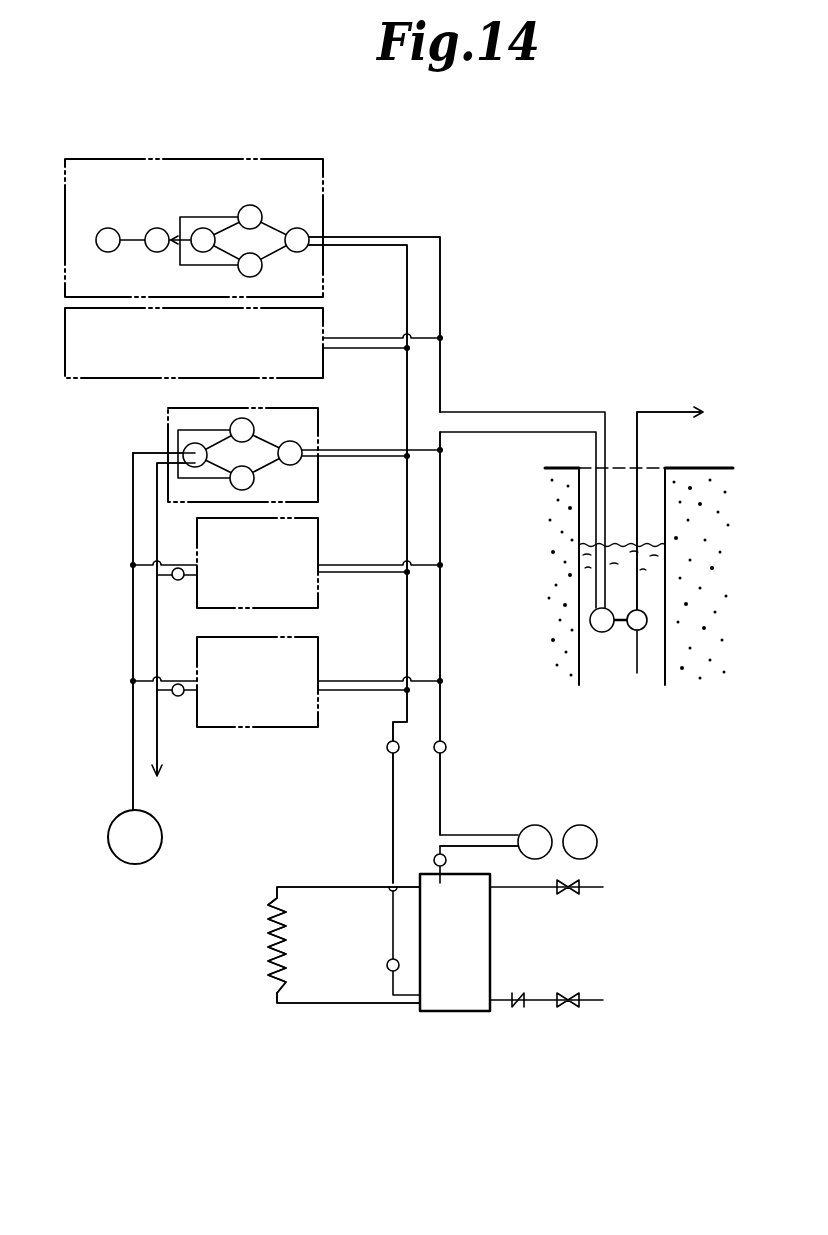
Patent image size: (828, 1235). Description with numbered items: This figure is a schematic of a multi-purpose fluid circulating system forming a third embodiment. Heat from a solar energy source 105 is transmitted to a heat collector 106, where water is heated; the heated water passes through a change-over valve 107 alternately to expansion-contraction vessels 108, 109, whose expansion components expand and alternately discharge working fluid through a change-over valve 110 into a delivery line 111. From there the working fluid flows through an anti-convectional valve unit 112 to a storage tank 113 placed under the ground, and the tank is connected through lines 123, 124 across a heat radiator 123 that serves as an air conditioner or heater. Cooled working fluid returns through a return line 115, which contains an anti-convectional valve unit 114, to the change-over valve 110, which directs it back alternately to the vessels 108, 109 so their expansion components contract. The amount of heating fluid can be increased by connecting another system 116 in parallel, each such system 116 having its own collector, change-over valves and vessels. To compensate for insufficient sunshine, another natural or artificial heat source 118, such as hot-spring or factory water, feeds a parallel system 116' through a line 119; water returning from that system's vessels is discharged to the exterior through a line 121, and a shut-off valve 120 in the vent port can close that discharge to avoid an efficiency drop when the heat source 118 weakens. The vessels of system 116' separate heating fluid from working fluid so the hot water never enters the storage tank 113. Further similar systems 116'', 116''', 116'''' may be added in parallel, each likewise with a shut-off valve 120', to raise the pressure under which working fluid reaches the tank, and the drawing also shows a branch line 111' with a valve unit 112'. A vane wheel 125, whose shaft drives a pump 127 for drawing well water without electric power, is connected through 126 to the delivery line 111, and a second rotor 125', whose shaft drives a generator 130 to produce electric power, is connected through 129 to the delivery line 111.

The solar energy source 105 is at (110, 222).
The heat collector 106 is at (156, 229).
The change-over valve 107 is at (203, 228).
The expansion-contraction vessel 108 is at (252, 206).
The expansion-contraction vessel 109 is at (253, 275).
The change-over valve 110 is at (297, 228).
The delivery line 111 is at (374, 299).
The return supply line 111' is at (470, 633).
The anti-convectional valve unit 112 is at (466, 749).
The valve 112' is at (423, 830).
The storage tank 113 is at (437, 1013).
The anti-convectional valve unit 114 is at (387, 752).
The return line 115 is at (367, 246).
The system 116 is at (194, 203).
The system 116' is at (193, 366).
The control unit 116'' is at (280, 448).
The control unit 116''' is at (294, 563).
The control unit 116'''' is at (295, 680).
The heat source 118 is at (140, 863).
The line 119 is at (133, 760).
The shut-off valve 120 is at (180, 603).
The valve 120' is at (194, 728).
The line 121 is at (157, 535).
The heat radiator 123 is at (266, 958).
The line 124 is at (302, 1005).
The vane wheel 125 is at (559, 643).
The pump 125' is at (547, 815).
The connection to delivery line 126 is at (544, 411).
The pump 127 is at (632, 631).
The connection to delivery line 129 is at (480, 836).
The generator 130 is at (587, 828).